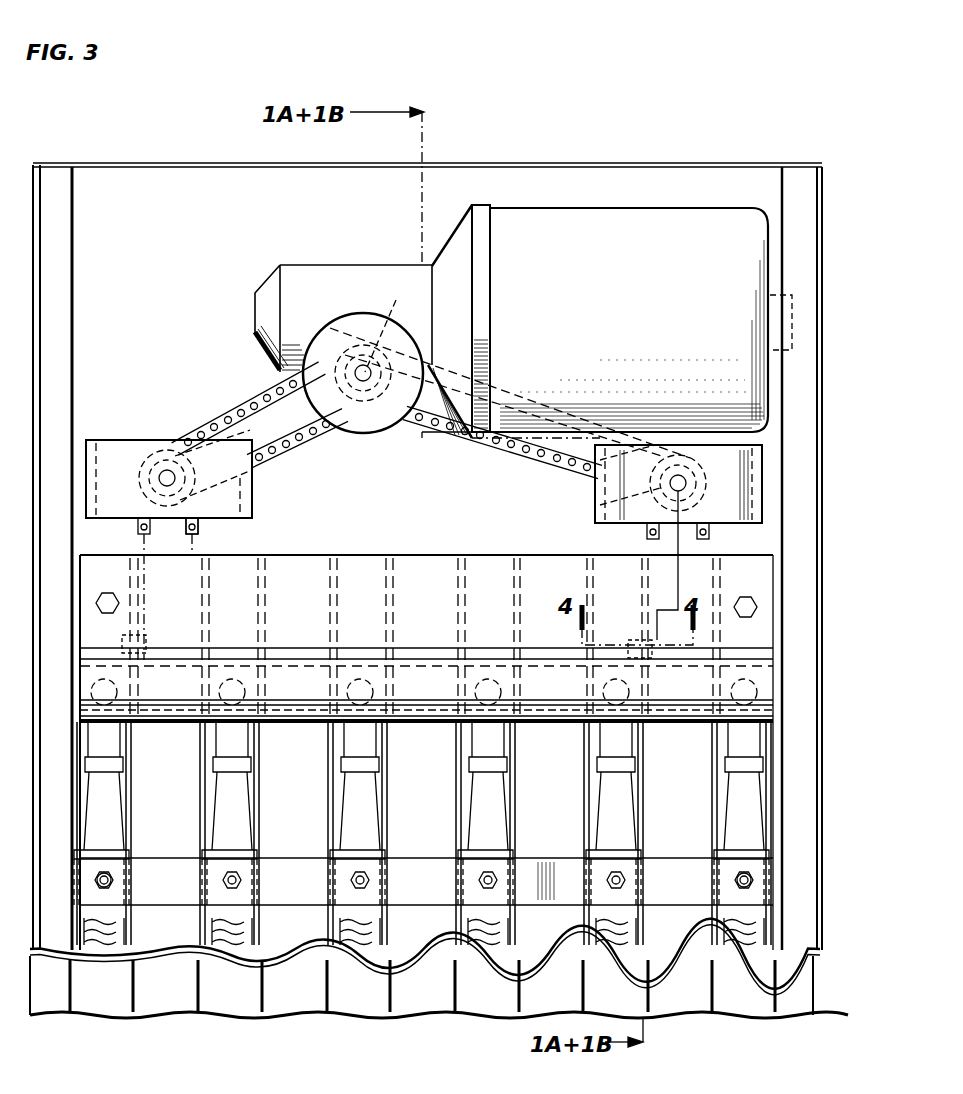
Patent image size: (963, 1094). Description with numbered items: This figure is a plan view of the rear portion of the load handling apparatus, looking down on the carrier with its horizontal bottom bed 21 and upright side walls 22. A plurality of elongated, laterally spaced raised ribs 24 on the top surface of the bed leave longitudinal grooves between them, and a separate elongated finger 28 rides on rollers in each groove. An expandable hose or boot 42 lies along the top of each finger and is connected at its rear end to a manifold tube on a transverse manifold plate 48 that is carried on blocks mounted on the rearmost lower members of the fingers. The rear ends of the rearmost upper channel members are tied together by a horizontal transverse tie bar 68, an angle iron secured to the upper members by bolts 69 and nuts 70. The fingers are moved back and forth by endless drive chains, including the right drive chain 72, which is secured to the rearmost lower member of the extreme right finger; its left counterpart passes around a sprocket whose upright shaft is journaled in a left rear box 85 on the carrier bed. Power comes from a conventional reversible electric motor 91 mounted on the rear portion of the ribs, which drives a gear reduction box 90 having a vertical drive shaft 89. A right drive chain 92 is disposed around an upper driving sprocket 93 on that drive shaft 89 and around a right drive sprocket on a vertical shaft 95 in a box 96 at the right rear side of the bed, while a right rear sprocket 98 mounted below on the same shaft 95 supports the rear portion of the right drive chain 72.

The horizontal bottom bed 21 is at (322, 1012).
The upright side walls 22 is at (35, 1000).
The raised ribs 24 is at (180, 1000).
The finger 28 is at (365, 1000).
The expandable hose or boot 42 is at (108, 812).
The transverse manifold plate 48 is at (186, 617).
The tie bar 68 is at (548, 875).
The bolts 69 is at (113, 878).
The nuts 70 is at (112, 890).
The right drive chain 72 is at (200, 527).
The left rear box 85 is at (752, 503).
The vertical drive shaft 89 is at (370, 385).
The gear reduction box 90 is at (270, 285).
The reversible electric motor 91 is at (625, 225).
The right drive chain 92 is at (258, 400).
The upper driving sprocket 93 is at (366, 355).
The vertical shaft 95 is at (167, 470).
The box 96 is at (125, 440).
The right rear sprocket 98 is at (156, 478).